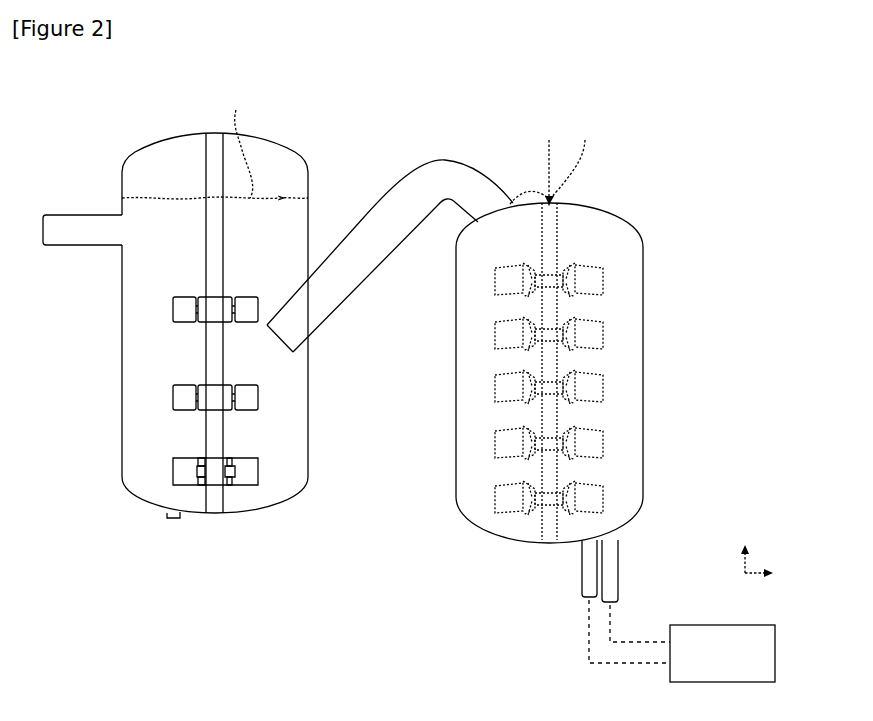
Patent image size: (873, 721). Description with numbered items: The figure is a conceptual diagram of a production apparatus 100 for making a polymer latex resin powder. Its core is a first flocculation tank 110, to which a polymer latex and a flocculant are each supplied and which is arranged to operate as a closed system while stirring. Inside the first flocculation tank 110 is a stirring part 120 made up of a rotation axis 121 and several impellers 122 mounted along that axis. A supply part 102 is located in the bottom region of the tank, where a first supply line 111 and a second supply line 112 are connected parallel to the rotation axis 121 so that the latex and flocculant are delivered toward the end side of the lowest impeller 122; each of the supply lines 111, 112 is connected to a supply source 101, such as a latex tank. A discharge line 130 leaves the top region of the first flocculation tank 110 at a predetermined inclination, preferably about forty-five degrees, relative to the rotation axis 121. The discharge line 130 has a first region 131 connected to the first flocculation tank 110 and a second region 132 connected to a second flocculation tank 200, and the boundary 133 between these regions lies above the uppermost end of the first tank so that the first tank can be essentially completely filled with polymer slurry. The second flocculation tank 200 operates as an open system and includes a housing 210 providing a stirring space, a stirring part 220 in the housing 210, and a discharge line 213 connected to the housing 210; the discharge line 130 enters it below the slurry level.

The production apparatus 100 is at (650, 187).
The supply source 101 is at (776, 650).
The supply part 102 is at (618, 538).
The first flocculation tank 110 is at (645, 405).
The first supply line 111 is at (619, 572).
The second supply line 112 is at (581, 578).
The stirring part 120 is at (540, 525).
The rotation axis 121 is at (558, 224).
The impeller 122 is at (606, 271).
The discharge line 130 is at (457, 104).
The first region 131 is at (495, 180).
The second region 132 is at (370, 206).
The boundary 133 is at (445, 203).
The second flocculation tank 200 is at (160, 121).
The housing 210 is at (121, 441).
The discharge line 213 is at (55, 214).
The stirring part 220 is at (264, 476).